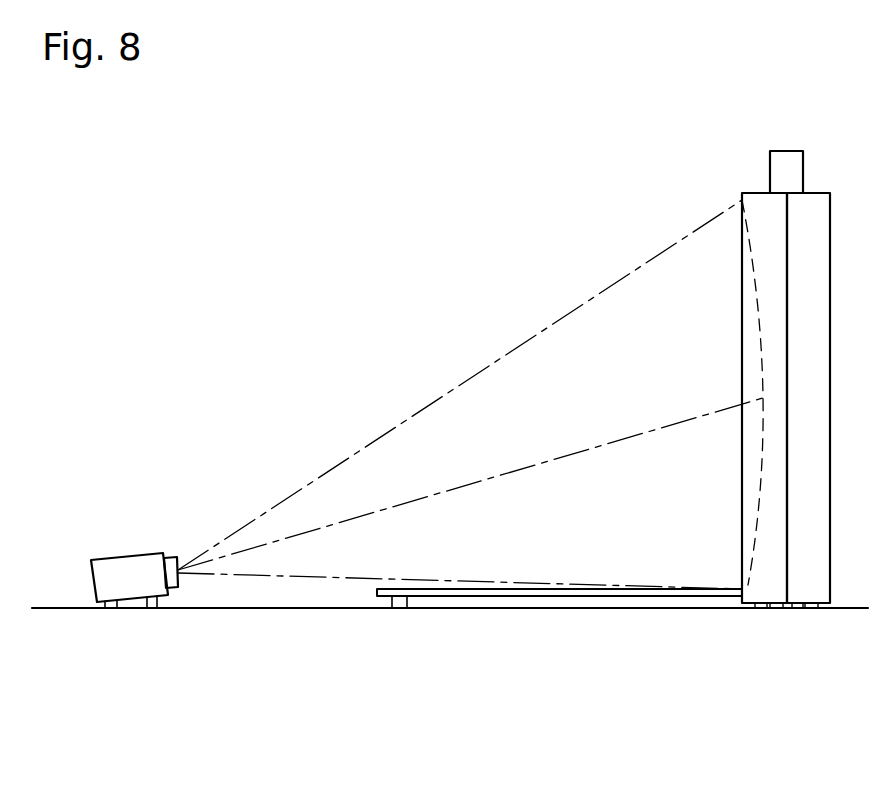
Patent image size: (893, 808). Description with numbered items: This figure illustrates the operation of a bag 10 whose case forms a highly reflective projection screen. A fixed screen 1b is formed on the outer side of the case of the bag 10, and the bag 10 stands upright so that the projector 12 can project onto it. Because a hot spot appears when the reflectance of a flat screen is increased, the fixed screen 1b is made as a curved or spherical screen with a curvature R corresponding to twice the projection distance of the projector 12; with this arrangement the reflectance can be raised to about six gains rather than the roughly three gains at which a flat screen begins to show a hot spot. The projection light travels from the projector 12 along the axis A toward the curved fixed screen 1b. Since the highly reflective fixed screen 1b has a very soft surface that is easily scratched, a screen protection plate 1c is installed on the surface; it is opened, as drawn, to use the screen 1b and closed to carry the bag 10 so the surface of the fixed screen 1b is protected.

The projector 12 is at (133, 588).
The screen protection plate 1c is at (530, 597).
The bag 10 is at (723, 419).
The fixed screen 1b is at (747, 487).
The curvature R is at (762, 340).
The projection light axis A is at (470, 484).